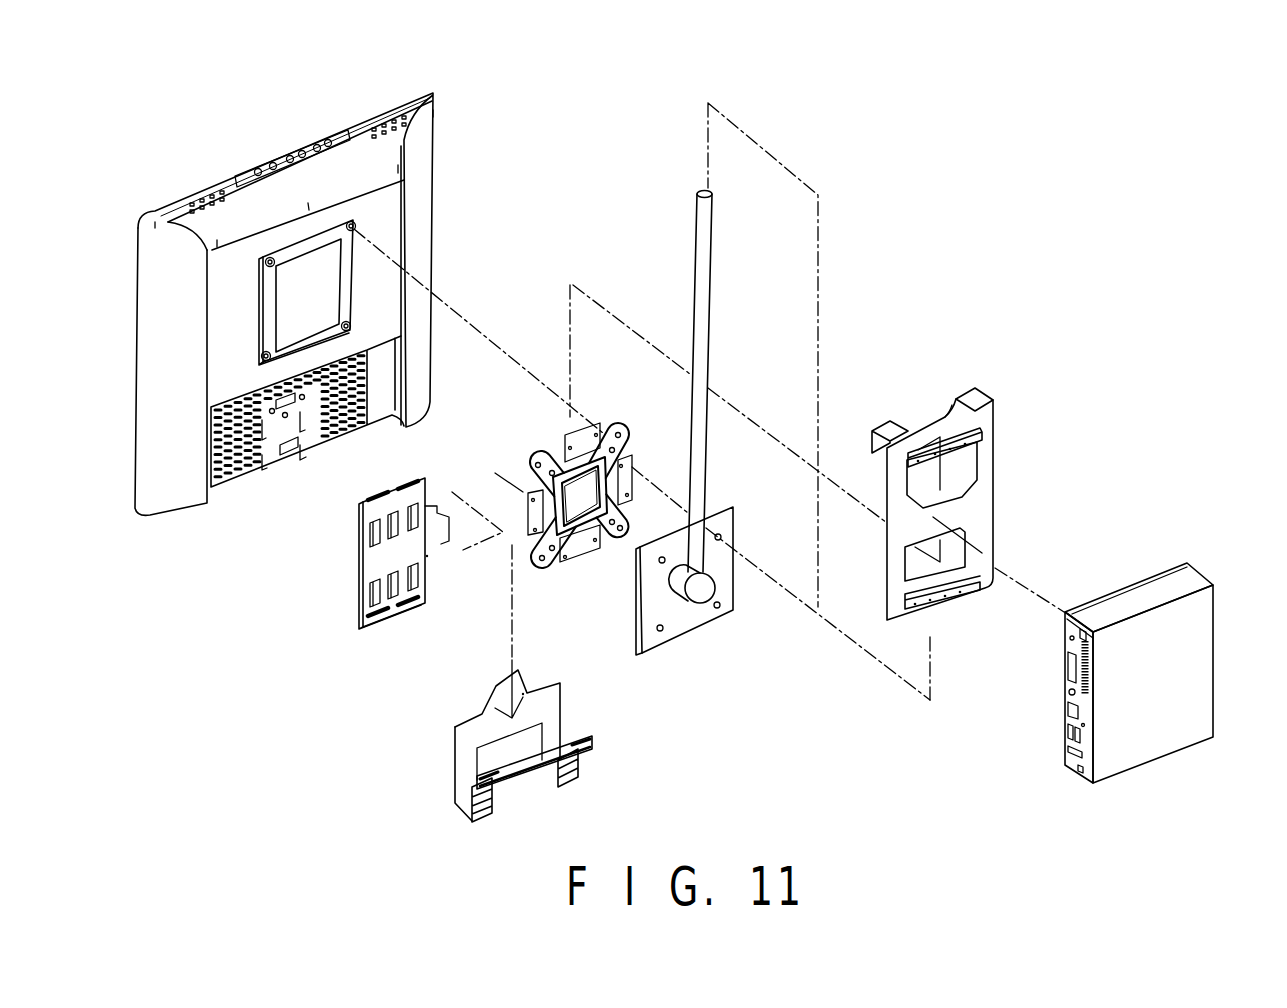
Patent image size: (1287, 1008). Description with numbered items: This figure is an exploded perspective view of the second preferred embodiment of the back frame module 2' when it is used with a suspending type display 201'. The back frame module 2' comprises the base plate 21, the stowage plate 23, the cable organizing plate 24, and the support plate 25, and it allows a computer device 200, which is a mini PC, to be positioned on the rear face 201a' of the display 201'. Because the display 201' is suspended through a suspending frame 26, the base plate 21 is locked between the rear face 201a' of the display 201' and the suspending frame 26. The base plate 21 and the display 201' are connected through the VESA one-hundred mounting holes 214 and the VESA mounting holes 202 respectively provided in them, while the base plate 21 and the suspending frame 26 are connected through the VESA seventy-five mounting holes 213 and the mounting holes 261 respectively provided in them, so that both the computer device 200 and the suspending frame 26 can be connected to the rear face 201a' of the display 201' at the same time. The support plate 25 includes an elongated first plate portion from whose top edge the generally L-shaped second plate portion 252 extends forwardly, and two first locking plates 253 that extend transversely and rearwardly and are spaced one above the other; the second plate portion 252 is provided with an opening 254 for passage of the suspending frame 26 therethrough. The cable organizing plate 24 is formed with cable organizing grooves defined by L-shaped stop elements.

The suspending type display 201' is at (295, 151).
The VESA mounting holes 202 is at (348, 223).
The rear face of the display 201a' is at (345, 301).
The VESA 100 mounting holes 214 is at (540, 460).
The VESA 75 mounting holes 213 is at (555, 475).
The base plate 21 is at (646, 440).
The suspending frame 26 is at (706, 337).
The VESA 75 mounting holes of the suspending frame 261 is at (718, 607).
The second plate portion 252 is at (920, 432).
The first locking plates 253 is at (955, 600).
The opening 254 is at (938, 394).
The back frame module 2' is at (1006, 461).
The support plate 25 is at (1024, 516).
The computer device 200 is at (1195, 627).
The stowage plate 23 is at (602, 781).
The cable organizing plate 24 is at (394, 644).